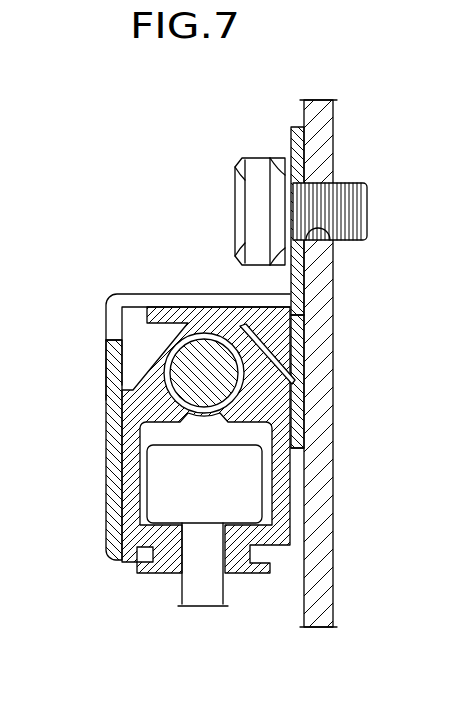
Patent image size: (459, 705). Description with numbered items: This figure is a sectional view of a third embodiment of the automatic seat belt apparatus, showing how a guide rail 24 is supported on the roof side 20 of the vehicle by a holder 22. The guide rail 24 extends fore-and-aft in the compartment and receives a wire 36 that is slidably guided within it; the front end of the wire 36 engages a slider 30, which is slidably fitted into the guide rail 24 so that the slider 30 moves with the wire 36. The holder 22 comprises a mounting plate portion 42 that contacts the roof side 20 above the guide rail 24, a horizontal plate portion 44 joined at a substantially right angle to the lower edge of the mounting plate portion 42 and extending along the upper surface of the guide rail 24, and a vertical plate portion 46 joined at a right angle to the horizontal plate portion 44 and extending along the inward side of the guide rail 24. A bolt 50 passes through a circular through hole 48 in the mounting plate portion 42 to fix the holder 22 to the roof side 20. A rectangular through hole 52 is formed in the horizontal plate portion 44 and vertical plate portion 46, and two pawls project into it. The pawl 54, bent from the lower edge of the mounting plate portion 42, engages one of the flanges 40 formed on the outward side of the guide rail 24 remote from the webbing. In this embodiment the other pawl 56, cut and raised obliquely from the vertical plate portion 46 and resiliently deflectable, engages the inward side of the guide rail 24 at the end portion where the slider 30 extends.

The roof side 20 is at (316, 112).
The holder 22 is at (120, 230).
The guide rail 24 is at (127, 449).
The slider 30 is at (187, 592).
The wire 36 is at (250, 383).
The flange 40 is at (133, 342).
The mounting plate portion 42 is at (297, 148).
The horizontal plate portion 44 is at (196, 292).
The vertical plate portion 46 is at (108, 368).
The through hole 48 is at (336, 242).
The bolt 50 is at (248, 197).
The rectangular through hole 52 is at (100, 338).
The pawl 54 is at (265, 330).
The pawl 56 is at (120, 563).